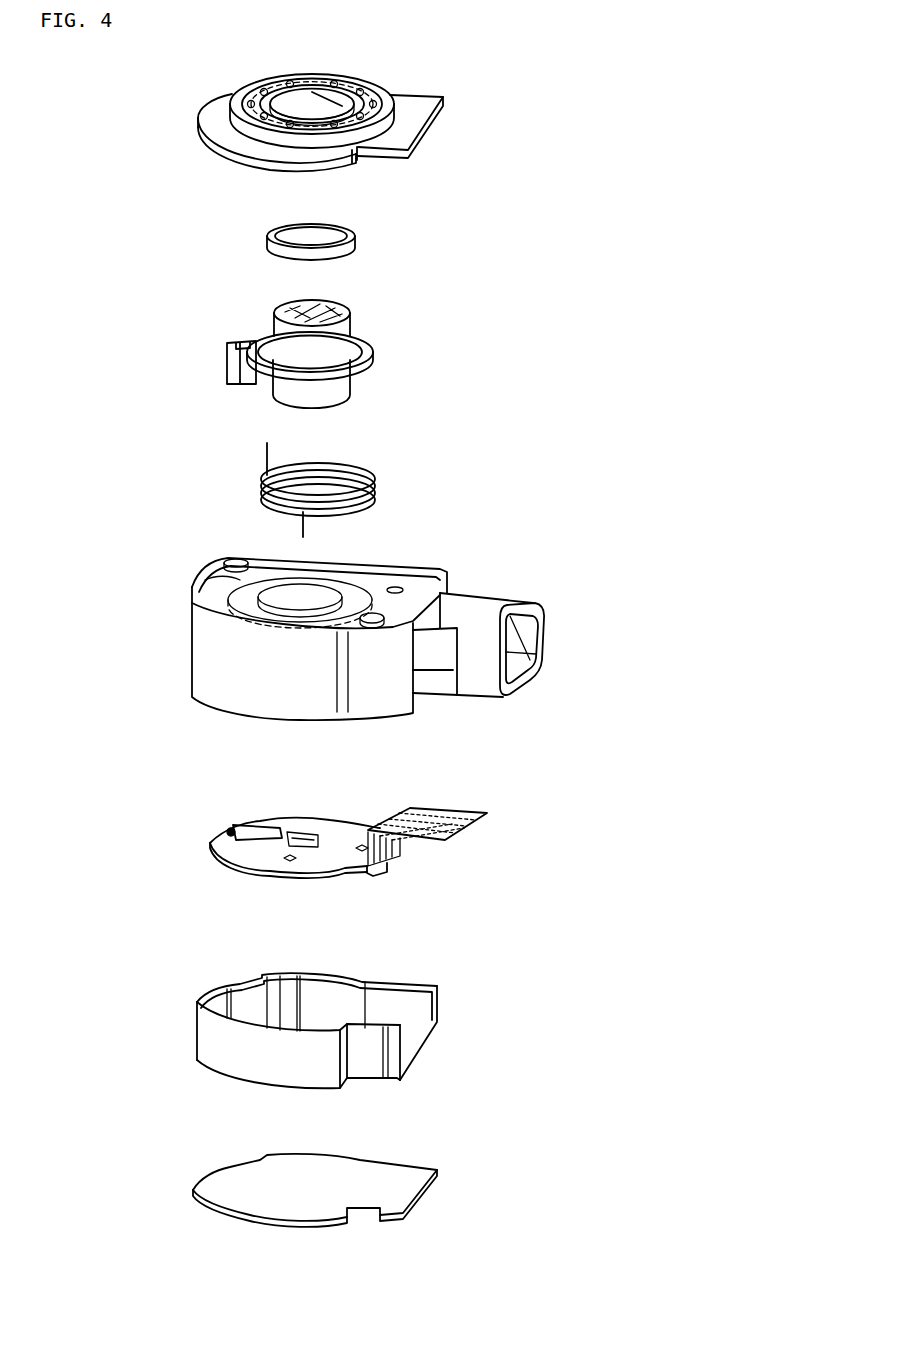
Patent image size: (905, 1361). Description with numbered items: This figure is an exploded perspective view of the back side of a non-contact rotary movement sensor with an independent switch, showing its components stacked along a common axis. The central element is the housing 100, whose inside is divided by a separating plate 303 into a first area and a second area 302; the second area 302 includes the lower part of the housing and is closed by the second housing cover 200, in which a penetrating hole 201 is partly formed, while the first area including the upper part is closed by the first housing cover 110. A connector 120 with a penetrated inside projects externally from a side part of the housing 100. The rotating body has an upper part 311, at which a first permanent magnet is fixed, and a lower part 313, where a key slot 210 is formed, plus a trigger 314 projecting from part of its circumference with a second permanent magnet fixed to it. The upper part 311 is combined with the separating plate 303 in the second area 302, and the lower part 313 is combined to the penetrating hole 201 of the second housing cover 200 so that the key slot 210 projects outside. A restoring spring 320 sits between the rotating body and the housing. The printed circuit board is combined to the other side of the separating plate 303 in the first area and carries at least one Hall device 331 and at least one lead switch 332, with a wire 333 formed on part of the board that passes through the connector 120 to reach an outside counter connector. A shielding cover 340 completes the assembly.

The housing 100 is at (307, 610).
The first housing cover 110 is at (403, 1180).
The connector 120 is at (490, 610).
The second housing cover 200 is at (403, 159).
The penetrating hole 201 is at (397, 130).
The key slot 210 is at (349, 335).
The second area 302 is at (277, 617).
The separating plate 303 is at (193, 597).
The upper part 311 is at (320, 383).
The lower part 313 is at (317, 340).
The trigger 314 is at (199, 328).
The restoring spring 320 is at (377, 500).
The Hall device 331 is at (326, 838).
The lead switch 332 is at (250, 832).
The wire 333 is at (413, 838).
The shielding cover 340 is at (415, 1048).